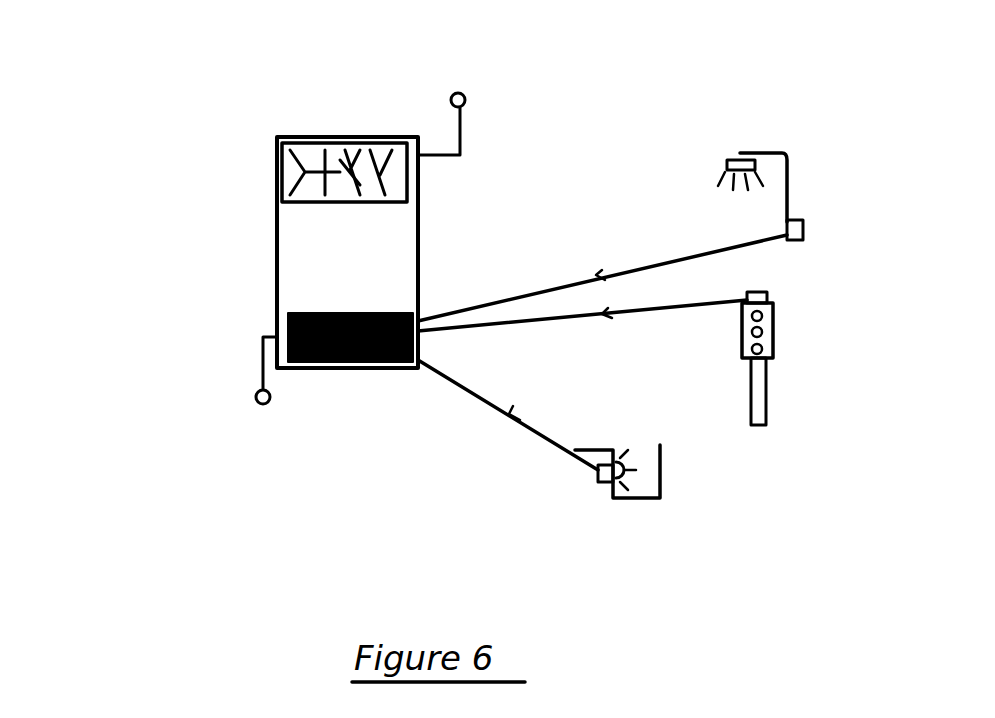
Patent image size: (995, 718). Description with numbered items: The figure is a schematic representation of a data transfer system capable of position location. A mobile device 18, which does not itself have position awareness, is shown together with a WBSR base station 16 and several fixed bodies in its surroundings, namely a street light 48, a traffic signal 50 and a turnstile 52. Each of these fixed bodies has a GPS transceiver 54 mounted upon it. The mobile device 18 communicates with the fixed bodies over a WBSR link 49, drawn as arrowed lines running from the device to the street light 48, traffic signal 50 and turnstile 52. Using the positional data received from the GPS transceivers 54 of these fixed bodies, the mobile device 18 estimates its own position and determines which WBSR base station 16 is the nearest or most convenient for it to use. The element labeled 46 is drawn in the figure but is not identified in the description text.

The WBSR base station 16 is at (360, 136).
The mobile device 18 is at (158, 228).
The controller 46 is at (276, 138).
The street light 48 is at (797, 187).
The WBSR link 49 is at (622, 268).
The traffic signal 50 is at (777, 385).
The turnstile 52 is at (622, 500).
The GPS transceiver 54 is at (770, 295).